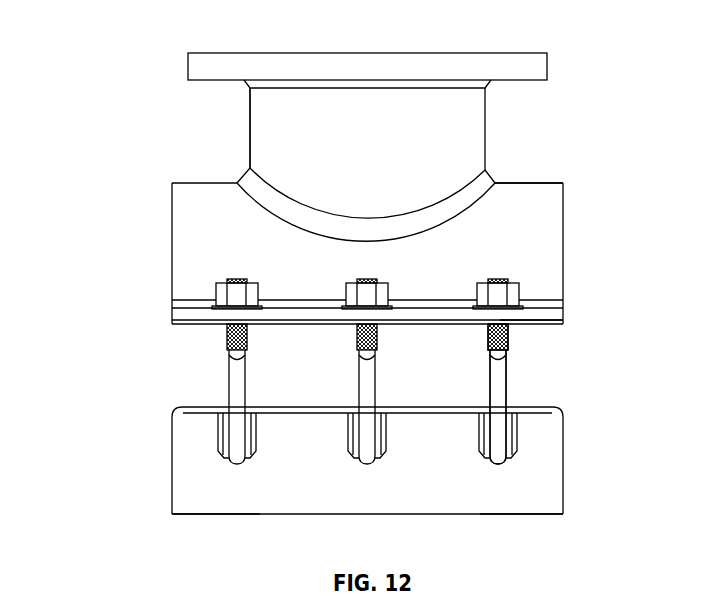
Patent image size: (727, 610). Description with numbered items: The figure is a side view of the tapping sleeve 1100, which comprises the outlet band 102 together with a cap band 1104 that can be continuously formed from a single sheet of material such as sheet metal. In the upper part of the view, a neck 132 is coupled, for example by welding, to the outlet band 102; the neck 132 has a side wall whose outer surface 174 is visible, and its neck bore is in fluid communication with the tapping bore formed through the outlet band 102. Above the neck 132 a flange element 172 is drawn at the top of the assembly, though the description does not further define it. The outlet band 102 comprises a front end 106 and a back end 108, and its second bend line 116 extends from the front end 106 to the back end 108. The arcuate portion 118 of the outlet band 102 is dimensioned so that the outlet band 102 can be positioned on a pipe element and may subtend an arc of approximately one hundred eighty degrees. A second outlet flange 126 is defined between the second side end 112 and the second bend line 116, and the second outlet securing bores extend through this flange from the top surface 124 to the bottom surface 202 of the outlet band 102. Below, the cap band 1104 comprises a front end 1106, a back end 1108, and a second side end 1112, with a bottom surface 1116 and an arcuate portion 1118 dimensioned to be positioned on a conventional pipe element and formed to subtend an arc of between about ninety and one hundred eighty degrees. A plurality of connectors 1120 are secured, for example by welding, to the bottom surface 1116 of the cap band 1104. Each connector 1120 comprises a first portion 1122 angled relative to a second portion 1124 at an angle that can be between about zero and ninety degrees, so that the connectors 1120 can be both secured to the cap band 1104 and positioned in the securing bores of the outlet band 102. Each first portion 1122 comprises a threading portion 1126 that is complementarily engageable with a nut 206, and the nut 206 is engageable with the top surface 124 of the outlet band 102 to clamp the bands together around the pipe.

The tapping sleeve 1100 is at (128, 47).
The top bar 172 is at (252, 54).
The neck 132 is at (302, 95).
The outer surface 174 is at (247, 108).
The top surface 124 is at (211, 192).
The outlet band 102 is at (530, 193).
The arcuate portion 118 is at (552, 196).
The back end 108 is at (565, 203).
The front end 106 is at (171, 240).
The second bend line 116 is at (170, 322).
The second side end 112 is at (553, 304).
The second outlet flange 126 is at (566, 328).
The nut 206 is at (220, 282).
The first portion 1122 is at (200, 324).
The bottom surface 202 is at (510, 331).
The threading portion 1126 is at (223, 338).
The second portion 1124 is at (225, 372).
The connectors 1120 is at (378, 398).
The second side end 1112 is at (200, 413).
The front end 1106 is at (171, 478).
The back end 1108 is at (565, 472).
The cap band 1104 is at (400, 512).
The bottom surface 1116 is at (215, 510).
The arcuate portion 1118 is at (498, 512).